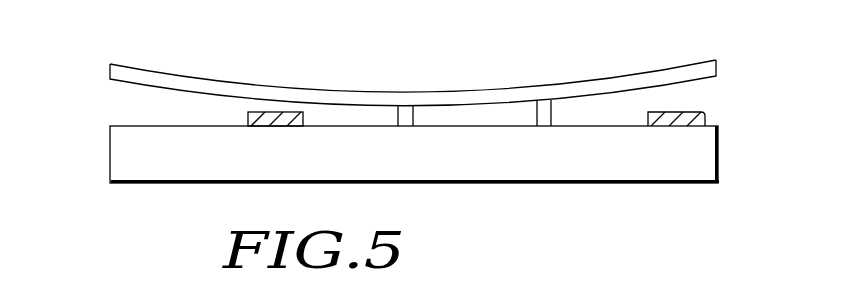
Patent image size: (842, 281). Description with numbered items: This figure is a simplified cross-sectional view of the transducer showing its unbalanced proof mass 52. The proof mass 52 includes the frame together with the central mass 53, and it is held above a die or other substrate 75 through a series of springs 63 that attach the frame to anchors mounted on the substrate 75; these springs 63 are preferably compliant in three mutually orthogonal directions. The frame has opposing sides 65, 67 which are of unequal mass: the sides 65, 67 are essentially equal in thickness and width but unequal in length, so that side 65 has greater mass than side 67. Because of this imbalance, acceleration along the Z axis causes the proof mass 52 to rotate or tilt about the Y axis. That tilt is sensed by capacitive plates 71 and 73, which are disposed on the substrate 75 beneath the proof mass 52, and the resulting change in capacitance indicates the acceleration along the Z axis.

The proof mass 52 is at (110, 70).
The central mass 53 is at (483, 92).
The springs 63 is at (553, 113).
The side of frame 65 is at (229, 77).
The side of frame 67 is at (660, 55).
The capacitive plate 71 is at (274, 126).
The capacitive plate 73 is at (680, 126).
The substrate 75 is at (181, 168).